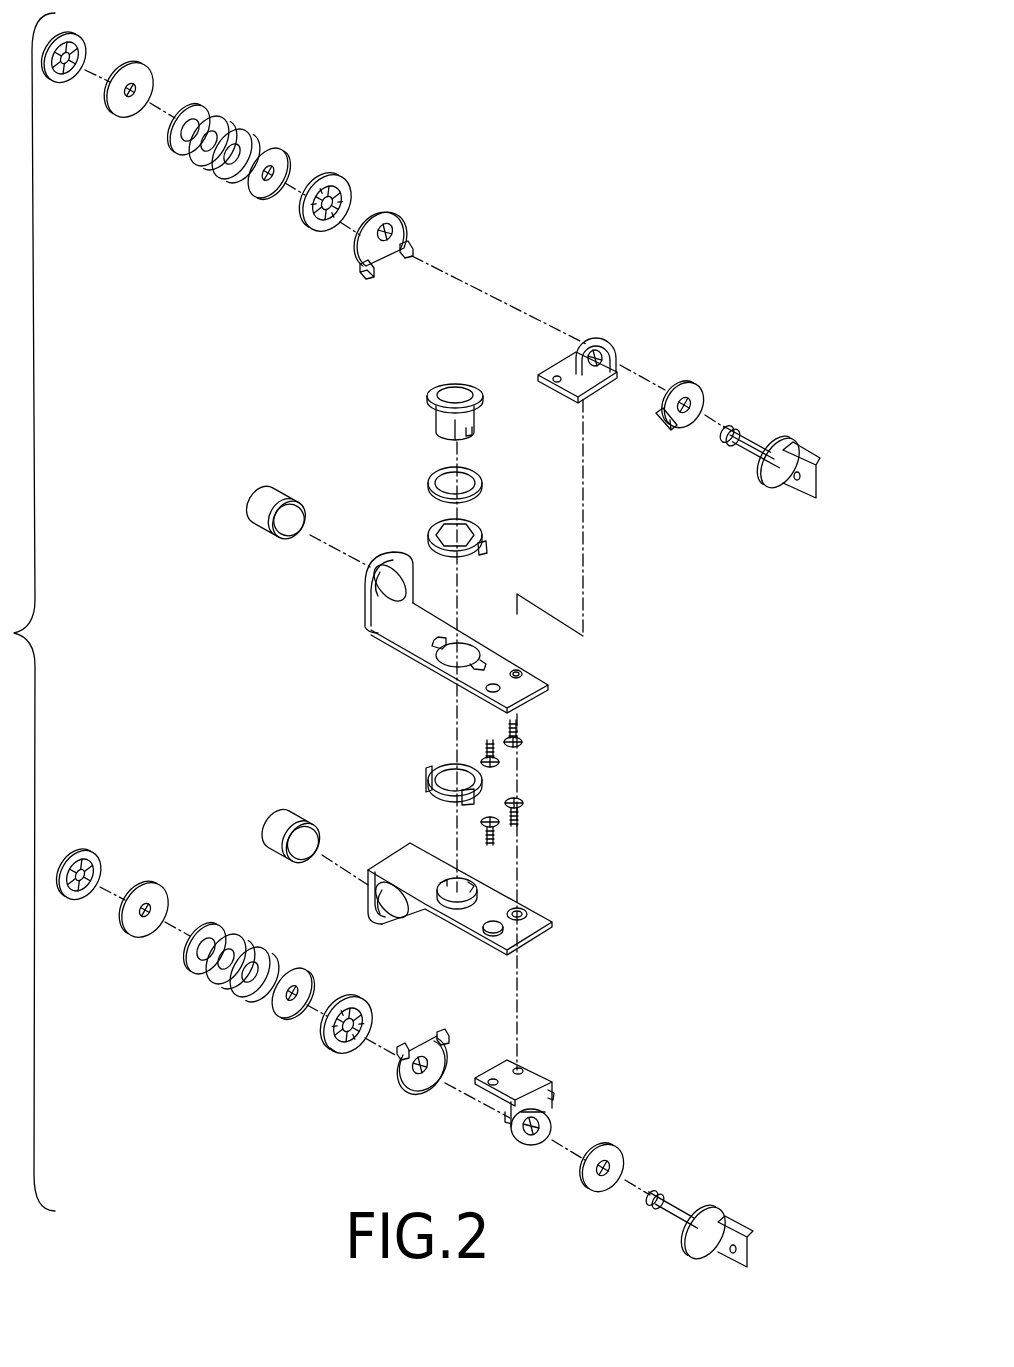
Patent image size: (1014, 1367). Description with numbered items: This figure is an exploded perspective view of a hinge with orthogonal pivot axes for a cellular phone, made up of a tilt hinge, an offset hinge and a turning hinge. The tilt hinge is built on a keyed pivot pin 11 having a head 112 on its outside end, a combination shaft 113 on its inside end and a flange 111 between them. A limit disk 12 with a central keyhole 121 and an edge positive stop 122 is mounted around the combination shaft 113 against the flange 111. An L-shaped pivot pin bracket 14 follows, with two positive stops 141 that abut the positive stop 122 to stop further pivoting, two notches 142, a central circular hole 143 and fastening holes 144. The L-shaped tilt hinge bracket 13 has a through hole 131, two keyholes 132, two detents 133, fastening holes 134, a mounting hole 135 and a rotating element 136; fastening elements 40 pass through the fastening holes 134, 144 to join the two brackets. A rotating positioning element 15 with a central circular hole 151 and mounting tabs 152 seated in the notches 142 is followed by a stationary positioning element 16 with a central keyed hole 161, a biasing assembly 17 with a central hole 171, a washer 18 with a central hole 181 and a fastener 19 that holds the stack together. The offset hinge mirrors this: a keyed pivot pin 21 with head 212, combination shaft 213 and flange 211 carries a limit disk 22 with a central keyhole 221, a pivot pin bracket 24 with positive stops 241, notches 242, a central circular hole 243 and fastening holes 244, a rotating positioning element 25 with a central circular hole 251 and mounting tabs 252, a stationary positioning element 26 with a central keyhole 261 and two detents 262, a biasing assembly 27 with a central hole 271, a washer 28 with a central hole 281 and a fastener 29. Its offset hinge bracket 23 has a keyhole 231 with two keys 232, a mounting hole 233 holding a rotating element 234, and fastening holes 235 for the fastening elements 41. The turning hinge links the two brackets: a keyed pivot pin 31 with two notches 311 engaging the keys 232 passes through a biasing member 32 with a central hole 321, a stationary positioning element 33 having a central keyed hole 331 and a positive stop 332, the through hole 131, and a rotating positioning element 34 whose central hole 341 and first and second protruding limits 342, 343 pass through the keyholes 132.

The keyed pivot pin 11 is at (689, 528).
The flange 111 is at (771, 484).
The head 112 is at (800, 495).
The combination shaft 113 is at (738, 447).
The limit disk 12 is at (700, 390).
The central keyhole 121 is at (690, 404).
The positive stop 122 is at (660, 416).
The tilt hinge bracket 13 is at (546, 695).
The through hole 131 is at (450, 660).
The keyholes 132 is at (438, 643).
The detents 133 is at (488, 665).
The fastening holes 134 is at (521, 675).
The mounting hole 135 is at (386, 592).
The rotating element 136 is at (262, 513).
The pivot pin bracket 14 is at (602, 333).
The positive stops 141 is at (617, 352).
The notches 142 is at (571, 393).
The central circular hole 143 is at (594, 343).
The fastening holes 144 is at (557, 376).
The rotating positioning element 15 is at (396, 214).
The central circular hole 151 is at (388, 233).
The mounting tabs 152 is at (370, 278).
The stationary positioning element 16 is at (342, 178).
The central keyed hole 161 is at (337, 192).
The biasing assembly 17 is at (291, 144).
The central hole 171 is at (275, 168).
The washer 18 is at (148, 72).
The central hole 181 is at (140, 90).
The fastener 19 is at (83, 37).
The keyed pivot pin 21 is at (675, 1248).
The flange 211 is at (730, 1220).
The head 212 is at (750, 1233).
The combination shaft 213 is at (690, 1198).
The limit disk 22 is at (590, 1186).
The central keyhole 221 is at (609, 1166).
The offset hinge bracket 23 is at (541, 932).
The keyhole 231 is at (472, 900).
The keys 232 is at (456, 885).
The mounting hole 233 is at (390, 907).
The rotating element 234 is at (290, 820).
The fastening holes 235 is at (522, 917).
The pivot pin bracket 24 is at (512, 1150).
The positive stops 241 is at (510, 1132).
The notches 242 is at (553, 1094).
The central circular hole 243 is at (539, 1124).
The fastening holes 244 is at (520, 1072).
The rotating positioning element 25 is at (398, 1080).
The central circular hole 251 is at (419, 1072).
The mounting tabs 252 is at (445, 1032).
The stationary positioning element 26 is at (356, 1005).
The central keyhole 261 is at (367, 1023).
The detents 262 is at (338, 1046).
The biasing assembly 27 is at (272, 1020).
The central hole 271 is at (228, 948).
The washer 28 is at (158, 892).
The central hole 281 is at (150, 907).
The fastener 29 is at (96, 850).
The keyed pivot pin 31 is at (437, 393).
The notches 311 is at (472, 437).
The biasing member 32 is at (479, 487).
The central hole 321 is at (438, 478).
The stationary positioning element 33 is at (481, 527).
The central keyed hole 331 is at (437, 530).
The positive stop 332 is at (484, 549).
The rotating positioning element 34 is at (460, 770).
The central hole 341 is at (484, 779).
The first protruding limit 342 is at (473, 793).
The second protruding limit 343 is at (428, 775).
The fastening elements 40 is at (519, 732).
The fastening elements 41 is at (522, 818).